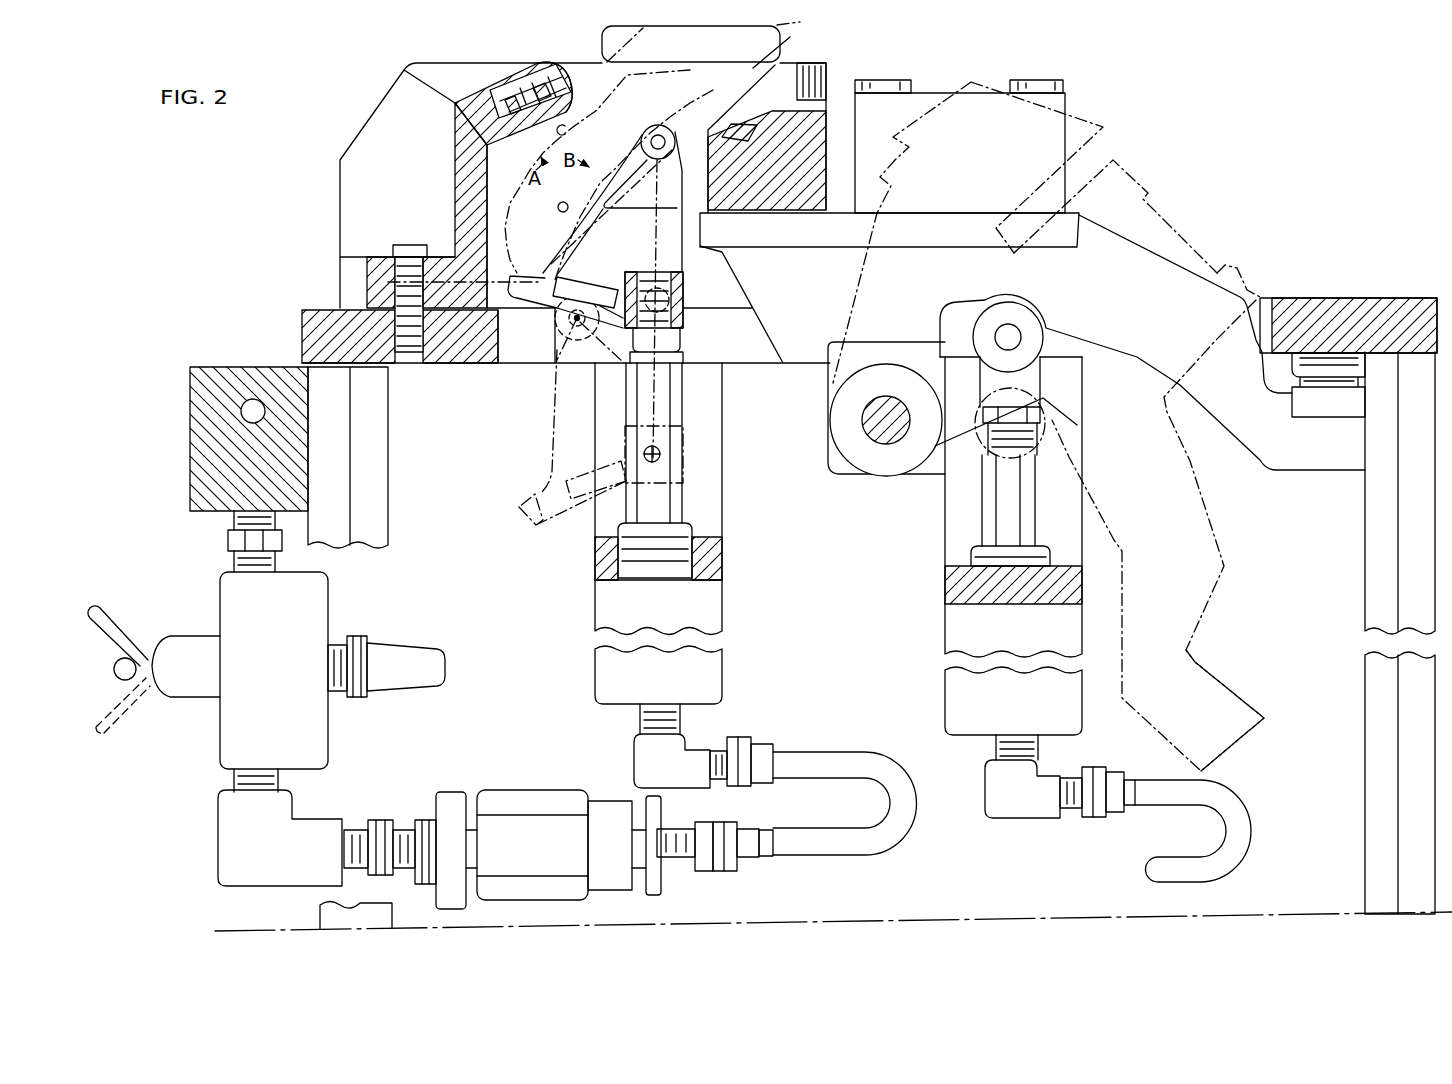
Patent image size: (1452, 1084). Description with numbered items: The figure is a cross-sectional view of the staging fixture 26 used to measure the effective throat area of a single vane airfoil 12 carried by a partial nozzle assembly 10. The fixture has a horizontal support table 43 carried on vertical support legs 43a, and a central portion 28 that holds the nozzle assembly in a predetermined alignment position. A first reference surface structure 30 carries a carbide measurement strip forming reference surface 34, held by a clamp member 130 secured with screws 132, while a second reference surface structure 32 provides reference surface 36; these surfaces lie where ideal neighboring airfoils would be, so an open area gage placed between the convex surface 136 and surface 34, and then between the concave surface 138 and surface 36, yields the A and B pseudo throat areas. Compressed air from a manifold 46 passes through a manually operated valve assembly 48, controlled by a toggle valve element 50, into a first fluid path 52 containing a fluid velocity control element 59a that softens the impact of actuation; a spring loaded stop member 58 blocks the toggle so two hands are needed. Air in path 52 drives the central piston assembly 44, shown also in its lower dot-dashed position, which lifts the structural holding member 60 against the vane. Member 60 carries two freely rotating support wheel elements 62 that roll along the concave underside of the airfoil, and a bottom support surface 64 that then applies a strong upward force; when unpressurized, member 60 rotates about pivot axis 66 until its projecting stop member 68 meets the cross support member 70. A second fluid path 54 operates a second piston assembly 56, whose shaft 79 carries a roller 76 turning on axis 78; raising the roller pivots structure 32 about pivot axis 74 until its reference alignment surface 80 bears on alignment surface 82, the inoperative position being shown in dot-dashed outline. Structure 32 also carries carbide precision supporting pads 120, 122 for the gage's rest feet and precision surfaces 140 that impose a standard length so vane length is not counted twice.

The partial nozzle assembly 10 is at (684, 26).
The vane airfoil 12 is at (605, 110).
The staging fixture 26 is at (262, 280).
The central portion 28 is at (540, 380).
The first reference surface structure 30 is at (462, 100).
The second reference surface structure 32 is at (1104, 120).
The reference surface 34 is at (566, 74).
The reference surface 36 is at (722, 128).
The horizontal support table 43 is at (1340, 310).
The vertical support legs 43a is at (381, 459).
The central piston assembly 44 is at (730, 560).
The manifold 46 is at (248, 380).
The valve assembly 48 is at (316, 609).
The toggle valve element 50 is at (115, 622).
The first fluid path 52 is at (615, 796).
The second fluid path 54 is at (1257, 800).
The second piston assembly 56 is at (991, 514).
The stop member 58 is at (113, 666).
The fluid velocity control element 59a is at (548, 800).
The structural holding member 60 is at (662, 237).
The support wheel elements 62 is at (670, 132).
The bottom support surface 64 is at (540, 502).
The pivot axis 66 is at (661, 455).
The projecting stop member 68 is at (573, 281).
The cross support member 70 is at (686, 300).
The pivot axis 74 is at (878, 427).
The roller 76 is at (966, 322).
The axis 78 is at (1018, 334).
The shaft 79 is at (1037, 394).
The reference alignment surface 80 is at (1220, 682).
The reference alignment surface 82 is at (1310, 385).
The precision supporting pad 120 is at (880, 82).
The precision supporting pad 122 is at (1025, 82).
The clamp member 130 is at (456, 176).
The screws 132 is at (508, 108).
The convex surface 136 is at (570, 130).
The concave surface 138 is at (558, 207).
The precision surfaces 140 is at (808, 72).